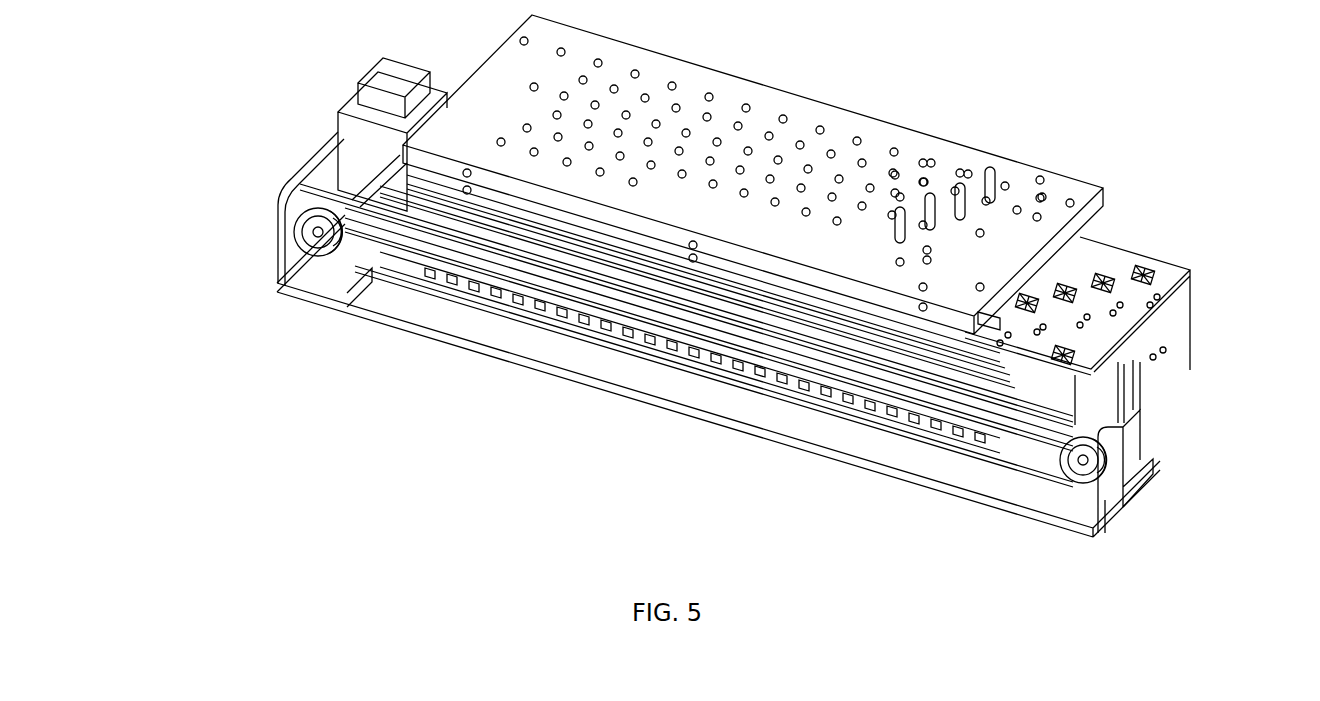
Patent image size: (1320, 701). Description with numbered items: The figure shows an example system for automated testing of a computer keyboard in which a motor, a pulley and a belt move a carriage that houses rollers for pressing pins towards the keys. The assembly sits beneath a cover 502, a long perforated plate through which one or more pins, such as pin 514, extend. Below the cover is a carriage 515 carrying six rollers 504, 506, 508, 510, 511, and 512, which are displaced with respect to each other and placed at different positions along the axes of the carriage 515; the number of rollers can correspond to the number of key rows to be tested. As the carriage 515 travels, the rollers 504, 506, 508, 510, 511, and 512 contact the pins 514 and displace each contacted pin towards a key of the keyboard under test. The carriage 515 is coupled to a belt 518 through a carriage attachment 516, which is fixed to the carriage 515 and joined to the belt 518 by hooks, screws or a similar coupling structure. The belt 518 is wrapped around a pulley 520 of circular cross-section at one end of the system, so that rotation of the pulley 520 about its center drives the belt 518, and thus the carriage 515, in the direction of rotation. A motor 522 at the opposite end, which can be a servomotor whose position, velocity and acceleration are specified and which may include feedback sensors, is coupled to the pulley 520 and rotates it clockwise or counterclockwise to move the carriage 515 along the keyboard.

The cover 502 is at (466, 330).
The roller 504 is at (1150, 272).
The roller 506 is at (1110, 280).
The roller 508 is at (1077, 293).
The roller 510 is at (1032, 305).
The roller 511 is at (990, 318).
The roller 512 is at (1072, 358).
The pin 514 is at (990, 180).
The carriage 515 is at (1088, 257).
The carriage attachment 516 is at (990, 430).
The belt 518 is at (417, 238).
The pulley 520 is at (306, 229).
The motor 522 is at (343, 158).